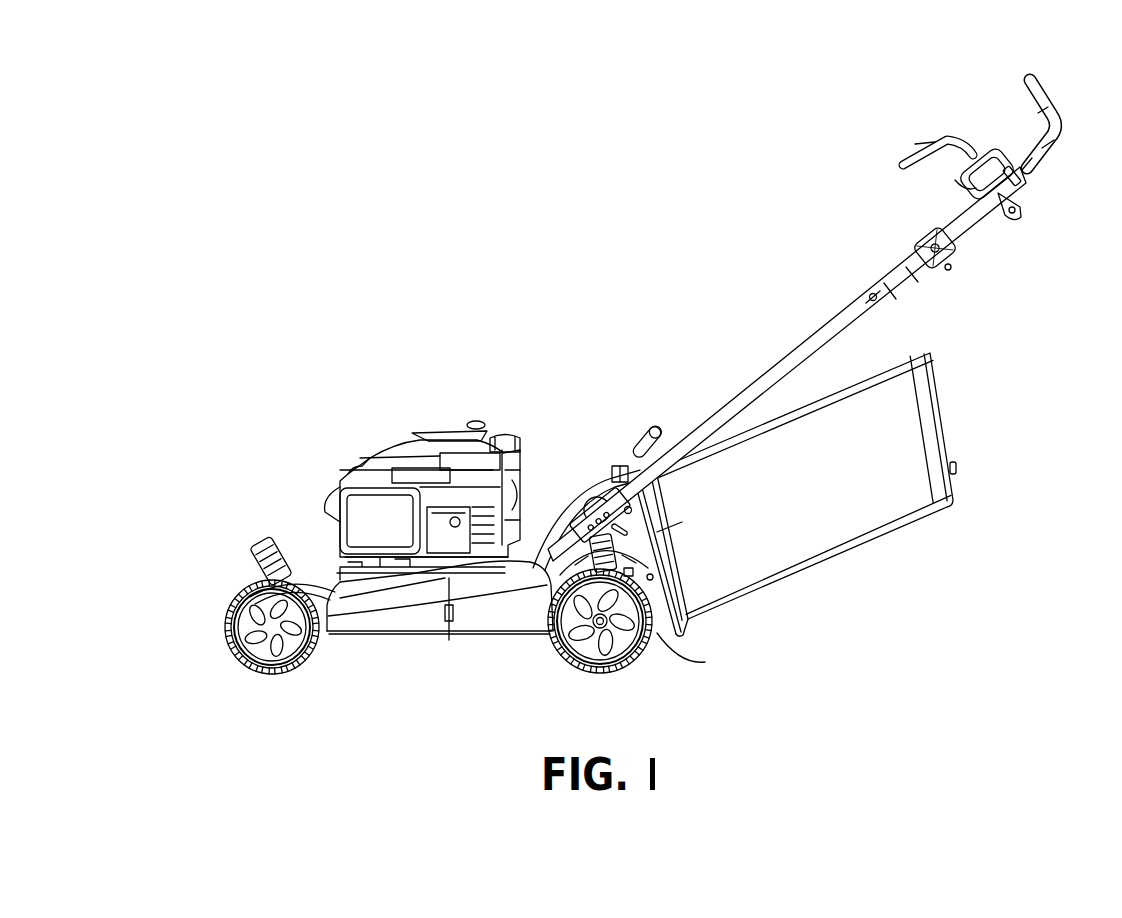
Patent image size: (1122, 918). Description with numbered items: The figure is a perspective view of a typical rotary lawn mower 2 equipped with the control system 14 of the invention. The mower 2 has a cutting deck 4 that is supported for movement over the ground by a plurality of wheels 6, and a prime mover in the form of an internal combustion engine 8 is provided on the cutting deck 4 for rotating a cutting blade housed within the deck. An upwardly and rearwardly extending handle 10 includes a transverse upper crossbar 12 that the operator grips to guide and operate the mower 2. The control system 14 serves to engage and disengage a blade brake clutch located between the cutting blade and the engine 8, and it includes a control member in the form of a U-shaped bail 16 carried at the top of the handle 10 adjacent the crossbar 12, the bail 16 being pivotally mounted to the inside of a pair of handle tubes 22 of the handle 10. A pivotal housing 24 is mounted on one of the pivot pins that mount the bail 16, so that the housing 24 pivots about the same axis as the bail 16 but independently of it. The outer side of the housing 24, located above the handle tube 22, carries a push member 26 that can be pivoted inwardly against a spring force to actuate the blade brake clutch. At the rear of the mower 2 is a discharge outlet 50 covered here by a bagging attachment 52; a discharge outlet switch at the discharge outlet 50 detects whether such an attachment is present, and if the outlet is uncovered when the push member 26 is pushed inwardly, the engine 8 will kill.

The lawn mower 2 is at (451, 370).
The cutting deck 4 is at (488, 605).
The wheels 6 is at (313, 653).
The internal combustion engine 8 is at (466, 426).
The handle 10 is at (792, 354).
The upper crossbar 12 is at (1033, 77).
The control system 14 is at (923, 128).
The bail 16 is at (903, 165).
The handle tubes 22 is at (1037, 157).
The pivotal housing 24 is at (944, 187).
The push member 26 is at (987, 163).
The discharge outlet 50 is at (680, 522).
The bagging attachment 52 is at (797, 533).